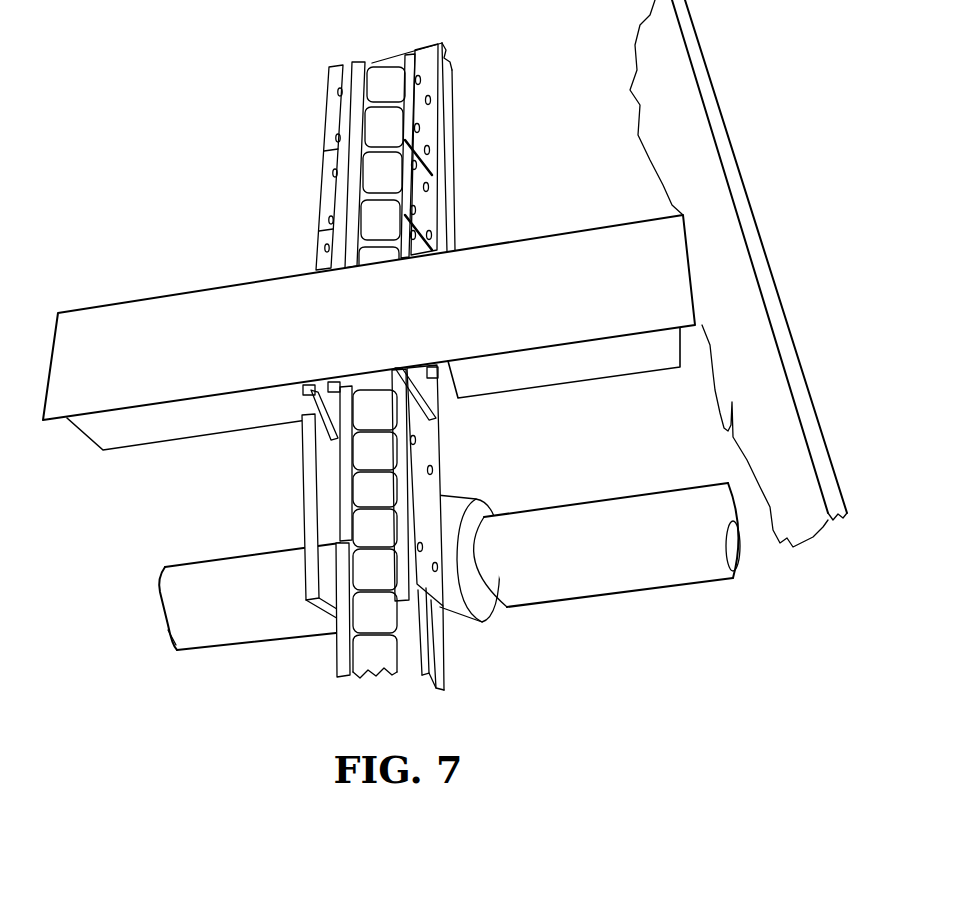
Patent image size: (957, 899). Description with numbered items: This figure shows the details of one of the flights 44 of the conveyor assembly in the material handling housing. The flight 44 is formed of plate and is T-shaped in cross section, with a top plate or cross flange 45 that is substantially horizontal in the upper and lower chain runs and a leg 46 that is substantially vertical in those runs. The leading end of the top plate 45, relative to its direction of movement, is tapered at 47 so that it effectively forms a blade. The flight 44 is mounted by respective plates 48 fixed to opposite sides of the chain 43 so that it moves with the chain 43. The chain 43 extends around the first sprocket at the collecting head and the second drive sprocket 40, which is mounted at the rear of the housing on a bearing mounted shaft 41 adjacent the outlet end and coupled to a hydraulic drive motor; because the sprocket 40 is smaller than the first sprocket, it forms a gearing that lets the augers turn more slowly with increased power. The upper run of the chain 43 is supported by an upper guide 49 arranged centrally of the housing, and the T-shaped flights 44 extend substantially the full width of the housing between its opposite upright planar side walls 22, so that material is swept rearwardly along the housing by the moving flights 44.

The side wall 22 is at (733, 238).
The second drive sprocket 40 is at (335, 530).
The bearing mounted shaft 41 is at (243, 630).
The chain 43 is at (385, 58).
The flight 44 is at (360, 333).
The top plate or cross flange 45 is at (553, 247).
The leg 46 is at (567, 372).
The tapered leading end 47 is at (70, 422).
The mounting plate 48 is at (313, 398).
The upper guide 49 is at (447, 110).